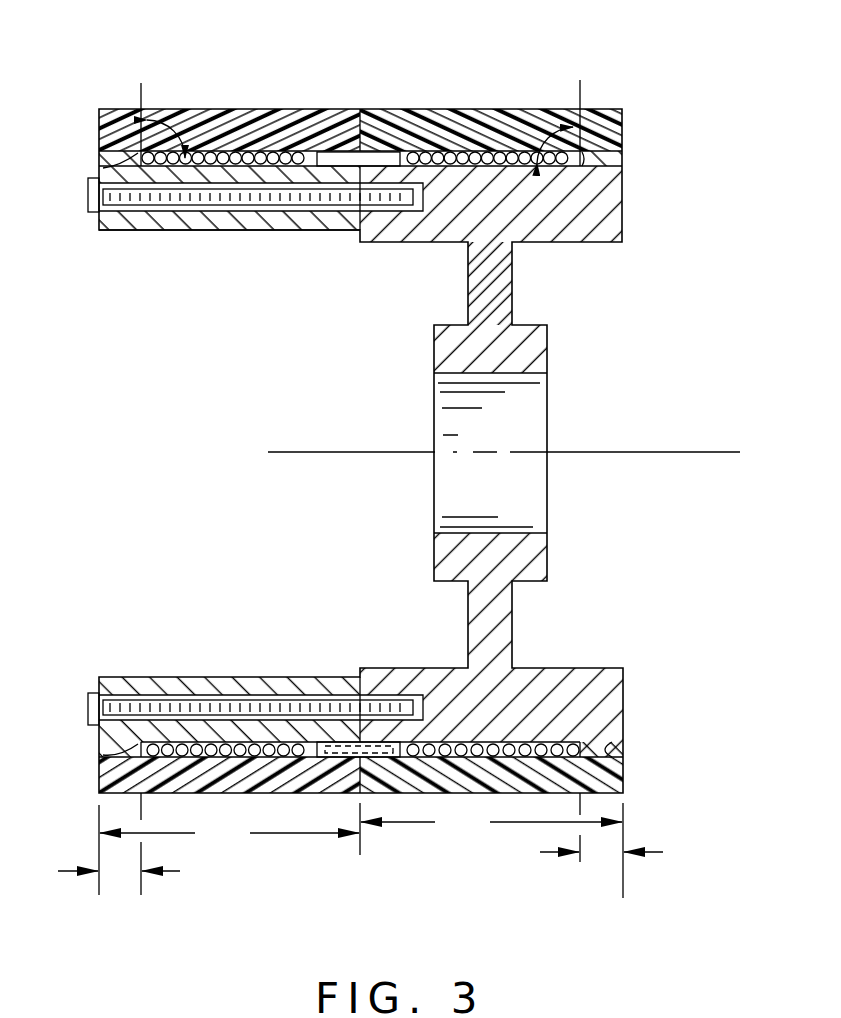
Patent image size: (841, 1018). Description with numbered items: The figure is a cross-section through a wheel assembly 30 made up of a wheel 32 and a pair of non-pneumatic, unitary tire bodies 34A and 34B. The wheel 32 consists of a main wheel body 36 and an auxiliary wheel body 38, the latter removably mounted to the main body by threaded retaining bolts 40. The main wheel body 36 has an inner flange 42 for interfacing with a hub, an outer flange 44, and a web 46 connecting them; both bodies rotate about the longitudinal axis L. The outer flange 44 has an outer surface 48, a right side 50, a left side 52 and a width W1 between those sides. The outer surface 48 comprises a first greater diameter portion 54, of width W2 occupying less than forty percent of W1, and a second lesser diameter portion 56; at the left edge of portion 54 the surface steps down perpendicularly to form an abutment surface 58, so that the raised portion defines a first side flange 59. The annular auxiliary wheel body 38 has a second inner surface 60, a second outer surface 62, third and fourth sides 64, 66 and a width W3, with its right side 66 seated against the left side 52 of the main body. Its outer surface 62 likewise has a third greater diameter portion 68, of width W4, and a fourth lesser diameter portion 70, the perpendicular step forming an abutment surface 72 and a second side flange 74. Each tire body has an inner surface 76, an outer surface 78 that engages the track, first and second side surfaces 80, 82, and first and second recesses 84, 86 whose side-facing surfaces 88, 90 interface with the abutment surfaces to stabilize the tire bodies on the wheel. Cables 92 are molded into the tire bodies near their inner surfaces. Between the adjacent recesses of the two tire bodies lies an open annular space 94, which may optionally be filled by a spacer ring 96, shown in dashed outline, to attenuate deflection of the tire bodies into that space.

The wheel assembly 30 is at (707, 61).
The wheel 32 is at (625, 218).
The tire body 34A is at (436, 106).
The tire body 34B is at (181, 106).
The main wheel body 36 is at (550, 343).
The auxiliary wheel body 38 is at (207, 239).
The retaining bolts 40 is at (88, 712).
The inner flange 42 is at (548, 363).
The outer flange 44 is at (559, 248).
The web 46 is at (467, 288).
The outer surface 48 is at (379, 158).
The right side 50 is at (623, 185).
The left side 52 is at (356, 168).
The first greater diameter portion 54 is at (578, 150).
The second lesser diameter portion 56 is at (492, 152).
The abutment surface 58 is at (590, 133).
The first side flange 59 is at (620, 132).
The second inner surface 60 is at (165, 232).
The second outer surface 62 is at (236, 232).
The third side 64 is at (98, 222).
The fourth side 66 is at (380, 242).
The third greater diameter portion 68 is at (125, 122).
The fourth lesser diameter portion 70 is at (283, 140).
The abutment surface 72 is at (157, 170).
The second side flange 74 is at (143, 152).
The inner surface 76 is at (300, 232).
The outer surface 78 is at (190, 125).
The first side surface 80 is at (620, 120).
The second side surface 82 is at (349, 108).
The first recess 84 is at (614, 158).
The second recess 86 is at (335, 152).
The side-facing surface 88 is at (617, 166).
The side-facing surface 90 is at (386, 245).
The cables 92 is at (463, 152).
The space 94 is at (373, 743).
The spacer ring 96 is at (363, 743).
The longitudinal axis L is at (712, 452).
The width W1 is at (492, 845).
The width W2 is at (629, 857).
The width W3 is at (229, 844).
The width W4 is at (96, 872).